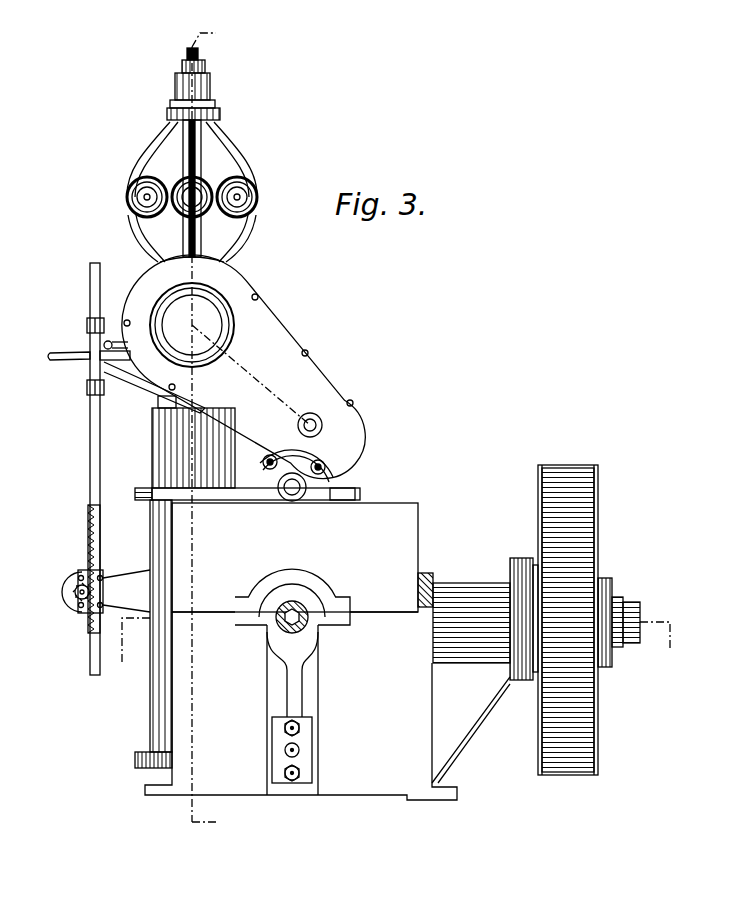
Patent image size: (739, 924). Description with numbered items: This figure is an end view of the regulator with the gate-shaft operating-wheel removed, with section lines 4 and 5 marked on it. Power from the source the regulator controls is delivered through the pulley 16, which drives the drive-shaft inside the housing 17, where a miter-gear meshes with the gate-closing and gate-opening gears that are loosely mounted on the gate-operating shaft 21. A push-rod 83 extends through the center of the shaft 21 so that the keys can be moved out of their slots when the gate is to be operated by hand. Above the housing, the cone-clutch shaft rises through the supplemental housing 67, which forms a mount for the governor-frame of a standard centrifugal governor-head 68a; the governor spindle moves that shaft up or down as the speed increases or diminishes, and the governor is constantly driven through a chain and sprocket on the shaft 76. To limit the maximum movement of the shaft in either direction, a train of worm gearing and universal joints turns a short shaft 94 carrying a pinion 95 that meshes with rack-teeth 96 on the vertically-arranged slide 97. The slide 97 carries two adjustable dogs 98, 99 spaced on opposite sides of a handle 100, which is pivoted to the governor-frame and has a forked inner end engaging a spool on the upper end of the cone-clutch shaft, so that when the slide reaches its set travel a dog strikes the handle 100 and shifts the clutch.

The section line 4- 4 is at (212, 428).
The section line 5- 5 is at (395, 653).
The pulley 16 is at (590, 505).
The housing 17 is at (400, 543).
The gate-operating shaft 21 is at (303, 623).
The supplemental housing 67 is at (157, 448).
The centrifugal governor-head 68a is at (258, 198).
The shaft 76 is at (322, 425).
The push-rod 83 is at (283, 605).
The short shaft 94 is at (78, 598).
The pinion 95 is at (74, 580).
The rack-teeth 96 is at (88, 558).
The slide 97 is at (90, 466).
The adjustable dog 98 is at (86, 325).
The adjustable dog 99 is at (86, 388).
The handle 100 is at (50, 360).